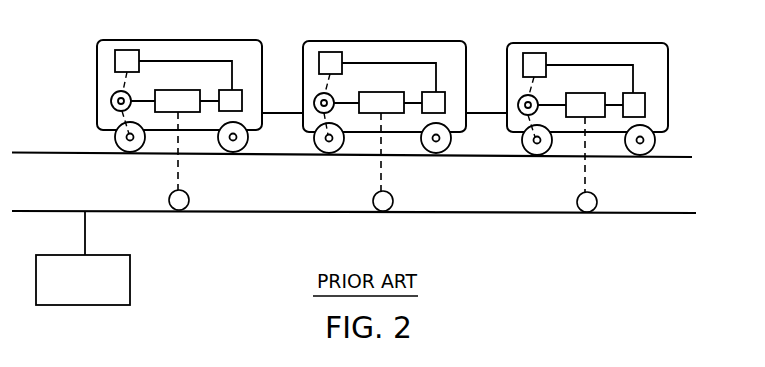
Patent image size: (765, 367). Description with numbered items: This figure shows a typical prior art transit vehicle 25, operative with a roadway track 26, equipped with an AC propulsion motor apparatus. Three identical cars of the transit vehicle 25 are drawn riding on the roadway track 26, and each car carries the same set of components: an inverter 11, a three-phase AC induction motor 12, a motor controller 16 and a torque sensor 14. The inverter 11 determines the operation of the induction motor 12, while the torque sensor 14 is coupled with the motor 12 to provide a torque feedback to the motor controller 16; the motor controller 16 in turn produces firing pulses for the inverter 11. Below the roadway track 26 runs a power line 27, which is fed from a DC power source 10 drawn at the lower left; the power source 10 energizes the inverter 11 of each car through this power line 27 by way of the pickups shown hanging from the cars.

The DC power source 10 is at (63, 255).
The inverter 11 is at (177, 89).
The AC induction motor 12 is at (111, 101).
The torque sensor 14 is at (115, 60).
The motor controller 16 is at (239, 89).
The transit vehicle 25 is at (198, 40).
The roadway track 26 is at (670, 156).
The power line 27 is at (650, 216).